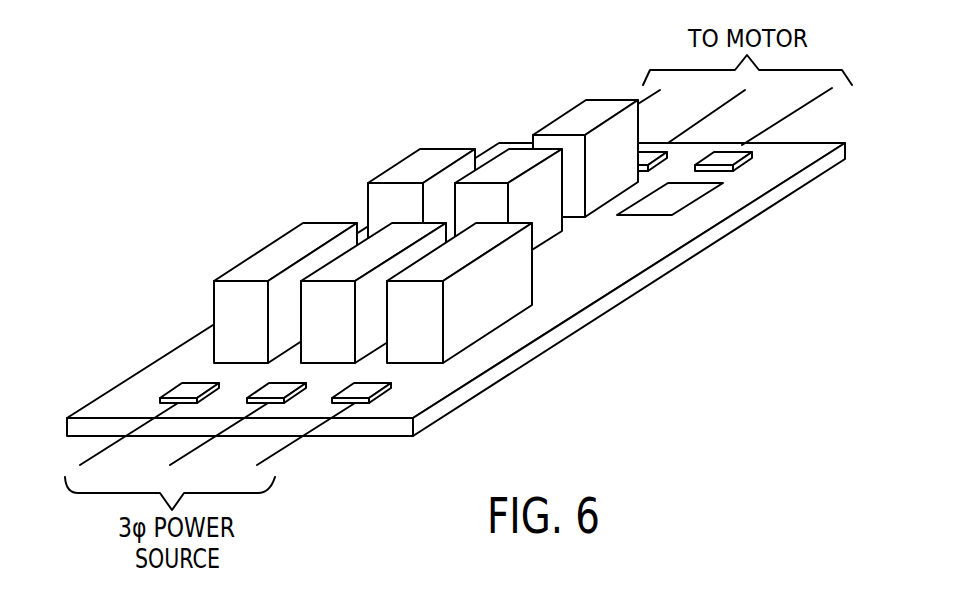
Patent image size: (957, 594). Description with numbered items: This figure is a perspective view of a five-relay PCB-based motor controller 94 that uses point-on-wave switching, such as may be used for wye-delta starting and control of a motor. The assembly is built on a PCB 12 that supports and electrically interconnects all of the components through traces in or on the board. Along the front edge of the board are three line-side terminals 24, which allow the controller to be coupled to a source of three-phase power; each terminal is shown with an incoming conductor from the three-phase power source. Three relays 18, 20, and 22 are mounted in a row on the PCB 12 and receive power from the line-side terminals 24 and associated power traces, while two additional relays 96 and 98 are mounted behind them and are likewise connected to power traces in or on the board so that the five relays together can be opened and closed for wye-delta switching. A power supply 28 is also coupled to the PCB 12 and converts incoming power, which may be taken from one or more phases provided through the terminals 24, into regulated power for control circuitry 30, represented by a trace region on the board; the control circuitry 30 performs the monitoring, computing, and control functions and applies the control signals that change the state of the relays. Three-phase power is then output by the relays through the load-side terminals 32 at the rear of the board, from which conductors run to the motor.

The PCB 12 is at (520, 365).
The relay 18 is at (242, 325).
The relay 20 is at (337, 298).
The relay 22 is at (505, 285).
The line-side terminals 24 is at (273, 392).
The power supply 28 is at (578, 120).
The control circuitry 30 is at (678, 196).
The load-side terminals 32 is at (647, 160).
The 5-relay PCB-based motor controller 94 is at (360, 466).
The relay 96 is at (418, 170).
The relay 98 is at (513, 162).